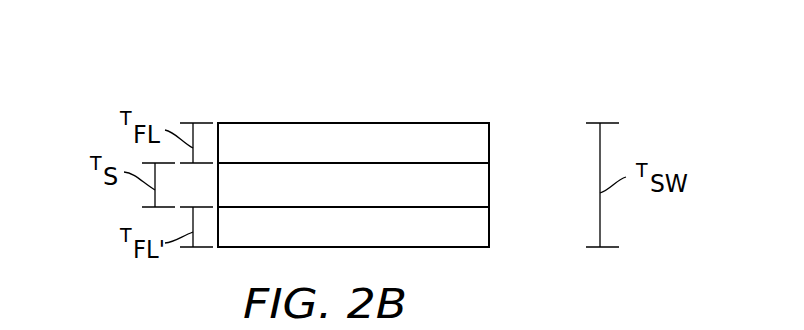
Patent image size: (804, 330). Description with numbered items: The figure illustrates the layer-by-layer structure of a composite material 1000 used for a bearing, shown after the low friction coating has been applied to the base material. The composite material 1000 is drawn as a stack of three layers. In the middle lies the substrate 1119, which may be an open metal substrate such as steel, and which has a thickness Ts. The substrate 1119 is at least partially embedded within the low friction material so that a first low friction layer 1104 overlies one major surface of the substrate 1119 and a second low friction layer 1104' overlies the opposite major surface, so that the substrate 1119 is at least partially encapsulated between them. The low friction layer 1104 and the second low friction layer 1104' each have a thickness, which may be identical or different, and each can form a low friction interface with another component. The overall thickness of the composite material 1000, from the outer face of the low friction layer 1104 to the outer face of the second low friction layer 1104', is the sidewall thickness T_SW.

The composite material 1000 is at (490, 42).
The low friction layer 1104 is at (391, 142).
The substrate 1119 is at (491, 193).
The second low friction layer 1104' is at (395, 223).